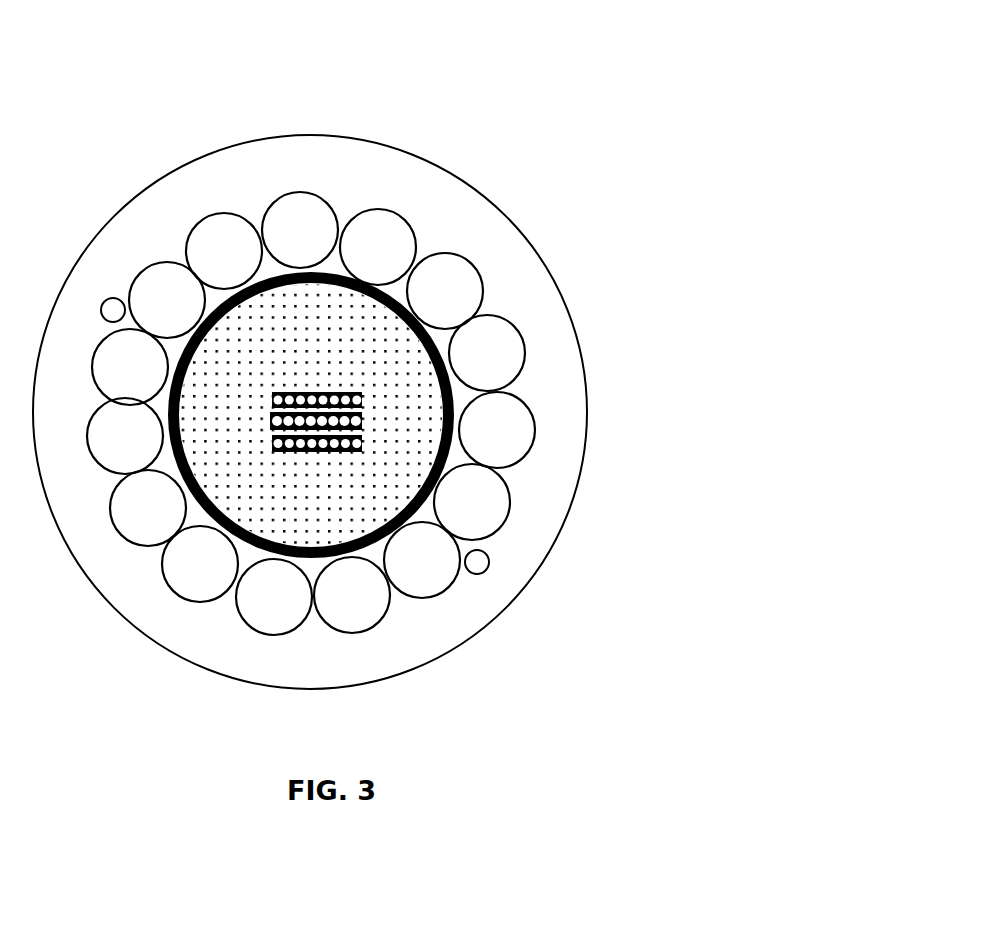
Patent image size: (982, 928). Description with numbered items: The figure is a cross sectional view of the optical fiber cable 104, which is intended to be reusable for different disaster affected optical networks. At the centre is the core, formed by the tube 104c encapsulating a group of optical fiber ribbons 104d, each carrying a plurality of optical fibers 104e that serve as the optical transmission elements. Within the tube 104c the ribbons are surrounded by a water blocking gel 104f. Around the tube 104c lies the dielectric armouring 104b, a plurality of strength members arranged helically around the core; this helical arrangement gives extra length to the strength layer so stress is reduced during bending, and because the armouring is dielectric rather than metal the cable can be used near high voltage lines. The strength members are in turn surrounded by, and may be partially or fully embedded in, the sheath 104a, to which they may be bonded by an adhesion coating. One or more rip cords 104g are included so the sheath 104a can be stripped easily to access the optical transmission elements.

The optical fiber cable 104 is at (70, 38).
The sheath 104a is at (523, 257).
The dielectric armouring 104b is at (493, 348).
The tube 104c is at (457, 395).
The group of optical fiber ribbons 104d is at (363, 418).
The optical fibers 104e is at (367, 447).
The water blocking gel 104f is at (325, 488).
The rip cords 104g is at (497, 563).